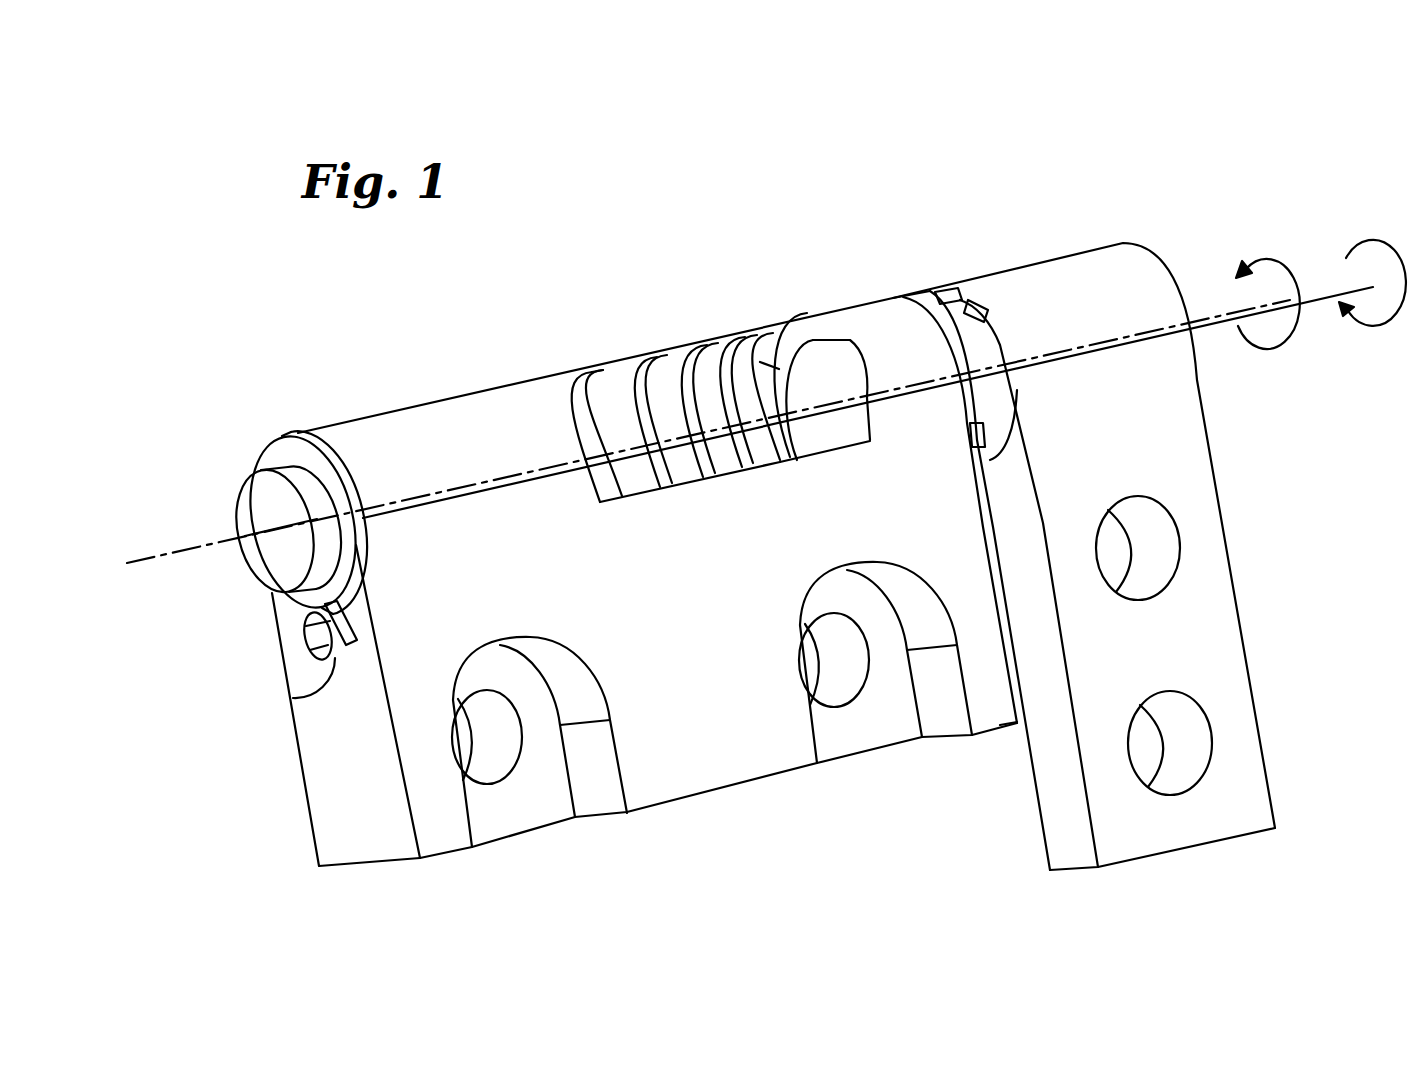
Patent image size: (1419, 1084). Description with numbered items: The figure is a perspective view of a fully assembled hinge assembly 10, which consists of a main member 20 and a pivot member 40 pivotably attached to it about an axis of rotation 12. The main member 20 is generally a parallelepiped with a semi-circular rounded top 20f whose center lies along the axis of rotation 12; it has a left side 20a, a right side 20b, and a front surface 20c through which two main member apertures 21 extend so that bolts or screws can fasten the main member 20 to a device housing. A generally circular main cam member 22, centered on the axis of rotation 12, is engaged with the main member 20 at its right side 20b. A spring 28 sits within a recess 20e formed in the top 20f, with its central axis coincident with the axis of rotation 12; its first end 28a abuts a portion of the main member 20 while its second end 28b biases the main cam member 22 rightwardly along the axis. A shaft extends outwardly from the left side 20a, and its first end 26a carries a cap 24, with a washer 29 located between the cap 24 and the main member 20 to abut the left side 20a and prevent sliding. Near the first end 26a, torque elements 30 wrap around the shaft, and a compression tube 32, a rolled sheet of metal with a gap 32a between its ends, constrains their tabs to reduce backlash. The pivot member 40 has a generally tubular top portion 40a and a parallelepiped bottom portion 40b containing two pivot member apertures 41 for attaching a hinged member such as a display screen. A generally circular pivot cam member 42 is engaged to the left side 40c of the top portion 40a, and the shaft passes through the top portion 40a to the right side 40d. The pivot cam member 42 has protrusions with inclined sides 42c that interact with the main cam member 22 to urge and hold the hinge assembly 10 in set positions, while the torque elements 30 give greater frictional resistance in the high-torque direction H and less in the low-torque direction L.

The hinge assembly 10 is at (948, 192).
The axis of rotation 12 is at (178, 560).
The main member 20 is at (794, 596).
The left side 20a is at (330, 808).
The right side 20b is at (1017, 707).
The front surface 20c is at (740, 768).
The recess 20e is at (840, 432).
The top 20f is at (437, 413).
The main member apertures 21 is at (480, 773).
The main cam member 22 is at (933, 283).
The cap 24 is at (255, 497).
The first end 26a is at (293, 437).
The spring 28 is at (619, 382).
The first end 28a is at (553, 380).
The second end 28b is at (775, 332).
The washer 29 is at (328, 425).
The torque elements 30 is at (293, 697).
The compression tube 32 is at (300, 620).
The gap 32a is at (305, 635).
The pivot member 40 is at (1112, 544).
The top portion 40a is at (1143, 262).
The bottom portion 40b is at (1230, 655).
The left side 40c is at (1057, 848).
The right side 40d is at (1240, 562).
The pivot member apertures 41 is at (1150, 540).
The pivot cam member 42 is at (963, 293).
The inclined sides 42c is at (958, 285).